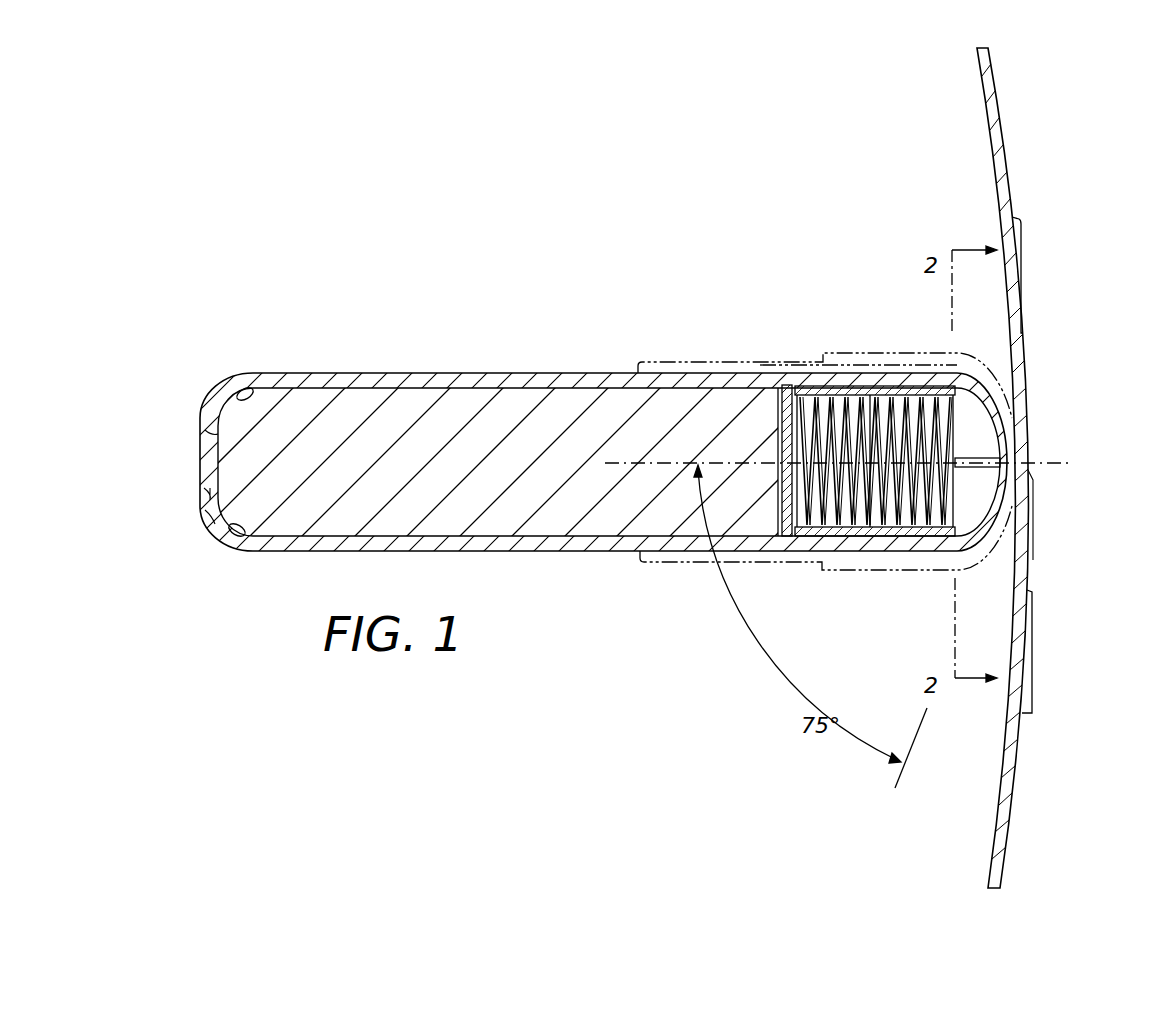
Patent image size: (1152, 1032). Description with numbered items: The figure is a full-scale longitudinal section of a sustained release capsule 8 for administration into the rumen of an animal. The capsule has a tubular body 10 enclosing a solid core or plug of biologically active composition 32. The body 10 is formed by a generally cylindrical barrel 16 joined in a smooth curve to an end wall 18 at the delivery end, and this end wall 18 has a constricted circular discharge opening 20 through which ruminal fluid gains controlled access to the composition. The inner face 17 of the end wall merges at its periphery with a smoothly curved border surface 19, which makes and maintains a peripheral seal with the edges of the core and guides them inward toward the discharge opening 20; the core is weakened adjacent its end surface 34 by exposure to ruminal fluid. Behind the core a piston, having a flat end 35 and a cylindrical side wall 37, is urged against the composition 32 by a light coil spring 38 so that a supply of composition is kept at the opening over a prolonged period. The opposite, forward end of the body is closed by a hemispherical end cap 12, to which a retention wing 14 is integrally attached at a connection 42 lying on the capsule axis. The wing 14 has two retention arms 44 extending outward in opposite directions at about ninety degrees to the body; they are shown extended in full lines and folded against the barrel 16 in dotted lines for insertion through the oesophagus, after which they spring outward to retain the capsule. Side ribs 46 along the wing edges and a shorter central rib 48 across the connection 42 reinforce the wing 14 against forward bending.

The sustained release capsule 8 is at (492, 370).
The tubular body 10 is at (619, 328).
The hemispherical end cap 12 is at (935, 553).
The retention wing 14 is at (1034, 324).
The barrel 16 is at (573, 552).
The inner face 17 is at (218, 437).
The end wall 18 is at (207, 400).
The border surface 19 is at (253, 392).
The discharge opening 20 is at (213, 497).
The biologically active composition 32 is at (508, 513).
The end surface 34 is at (210, 516).
The flat end 35 is at (778, 452).
The cylindrical side wall 37 is at (825, 545).
The coil spring 38 is at (957, 432).
The connection 42 is at (1035, 470).
The retention arms 44 is at (677, 362).
The side ribs 46 is at (1030, 672).
The central rib 48 is at (1037, 543).